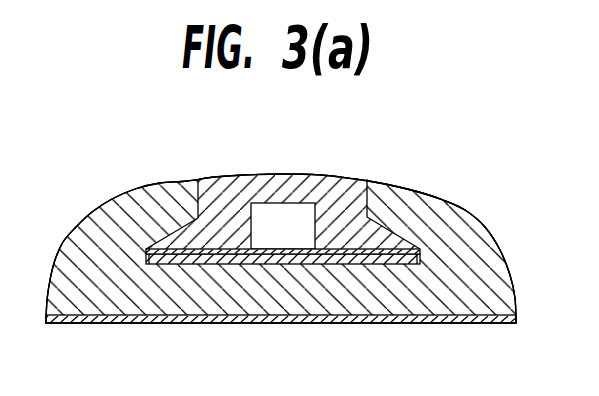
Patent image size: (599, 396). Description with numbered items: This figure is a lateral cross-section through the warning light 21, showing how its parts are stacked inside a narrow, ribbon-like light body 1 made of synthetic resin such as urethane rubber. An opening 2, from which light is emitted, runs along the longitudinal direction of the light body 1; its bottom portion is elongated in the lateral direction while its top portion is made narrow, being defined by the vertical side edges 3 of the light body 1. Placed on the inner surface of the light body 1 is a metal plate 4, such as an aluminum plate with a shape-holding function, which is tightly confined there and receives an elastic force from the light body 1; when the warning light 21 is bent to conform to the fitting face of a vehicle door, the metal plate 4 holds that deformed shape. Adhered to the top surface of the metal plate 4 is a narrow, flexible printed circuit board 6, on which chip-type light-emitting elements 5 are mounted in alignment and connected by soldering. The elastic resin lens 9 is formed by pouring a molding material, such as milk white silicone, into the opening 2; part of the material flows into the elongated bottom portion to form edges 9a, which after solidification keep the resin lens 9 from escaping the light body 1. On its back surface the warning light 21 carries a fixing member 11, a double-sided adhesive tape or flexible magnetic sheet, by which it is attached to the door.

The light body 1 is at (465, 216).
The opening 2 is at (356, 160).
The warning light 21 is at (125, 173).
The vertical side edges 3 is at (201, 188).
The elastic resin lens 9 is at (264, 182).
The edges 9a is at (413, 189).
The metal plate 4 is at (200, 258).
The chip-type light-emitting elements 5 is at (306, 237).
The flexible printed circuit board 6 is at (270, 250).
The fixing member 11 is at (379, 324).